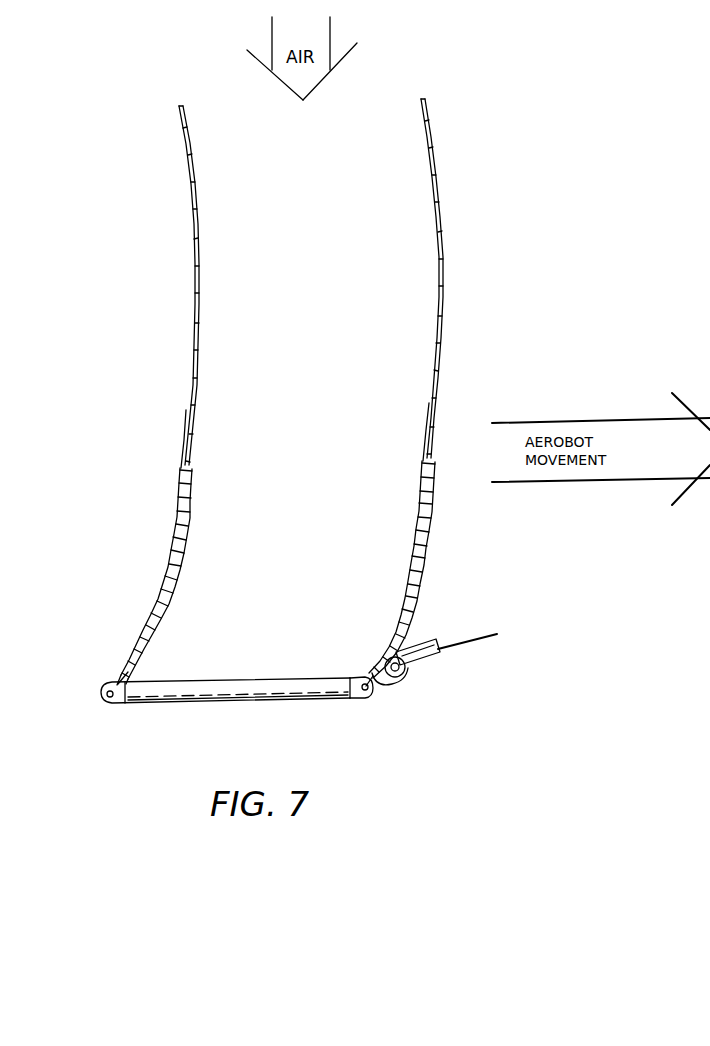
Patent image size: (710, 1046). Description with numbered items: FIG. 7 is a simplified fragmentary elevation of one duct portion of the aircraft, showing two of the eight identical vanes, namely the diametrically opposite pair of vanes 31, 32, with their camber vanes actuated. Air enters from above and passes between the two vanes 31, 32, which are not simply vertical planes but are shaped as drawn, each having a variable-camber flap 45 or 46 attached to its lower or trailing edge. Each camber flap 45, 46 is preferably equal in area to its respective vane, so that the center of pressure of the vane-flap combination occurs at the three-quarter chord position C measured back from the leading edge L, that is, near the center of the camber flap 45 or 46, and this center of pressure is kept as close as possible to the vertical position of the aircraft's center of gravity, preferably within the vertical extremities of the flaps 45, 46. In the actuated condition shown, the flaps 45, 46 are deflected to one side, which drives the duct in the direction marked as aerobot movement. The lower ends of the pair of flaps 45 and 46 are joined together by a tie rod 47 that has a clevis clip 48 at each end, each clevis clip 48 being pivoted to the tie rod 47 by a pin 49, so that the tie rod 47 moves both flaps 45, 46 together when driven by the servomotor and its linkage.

The vane 31 is at (437, 165).
The vane 32 is at (198, 176).
The variable-camber flap 45 is at (188, 505).
The variable-camber flap 46 is at (422, 492).
The tie rod 47 is at (262, 698).
The clevis clip 48 is at (118, 680).
The pin 49 is at (108, 699).
The leading edge L is at (423, 97).
The three-quarter chord position C is at (432, 548).